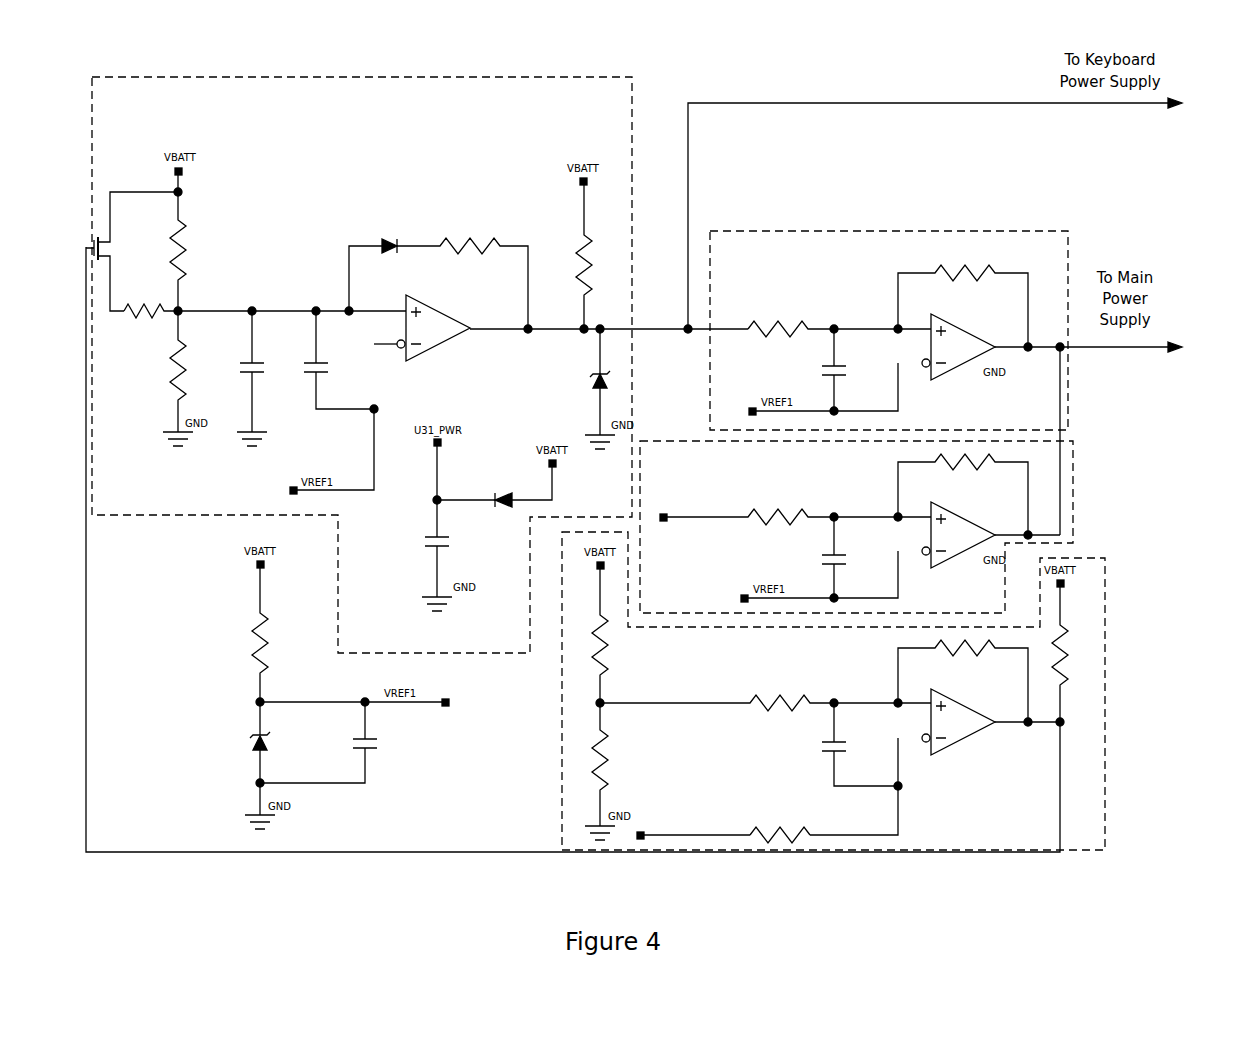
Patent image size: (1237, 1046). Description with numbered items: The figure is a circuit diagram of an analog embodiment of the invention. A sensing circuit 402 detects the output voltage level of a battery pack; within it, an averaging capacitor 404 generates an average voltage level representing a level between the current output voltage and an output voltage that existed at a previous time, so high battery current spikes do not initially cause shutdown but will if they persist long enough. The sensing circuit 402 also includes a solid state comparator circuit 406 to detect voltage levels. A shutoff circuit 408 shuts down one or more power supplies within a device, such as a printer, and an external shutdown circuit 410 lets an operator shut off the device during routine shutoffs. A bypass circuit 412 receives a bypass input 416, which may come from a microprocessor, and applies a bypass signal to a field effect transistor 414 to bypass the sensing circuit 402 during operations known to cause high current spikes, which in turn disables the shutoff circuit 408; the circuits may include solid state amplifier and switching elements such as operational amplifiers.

The sensing circuit 402 is at (289, 151).
The averaging capacitor 404 is at (262, 354).
The solid state comparator circuit 406 is at (434, 360).
The shutoff circuit 408 is at (796, 272).
The external shutdown circuit 410 is at (854, 482).
The bypass circuit 412 is at (702, 672).
The field effect transistor 414 is at (107, 265).
The bypass input 416 is at (702, 809).